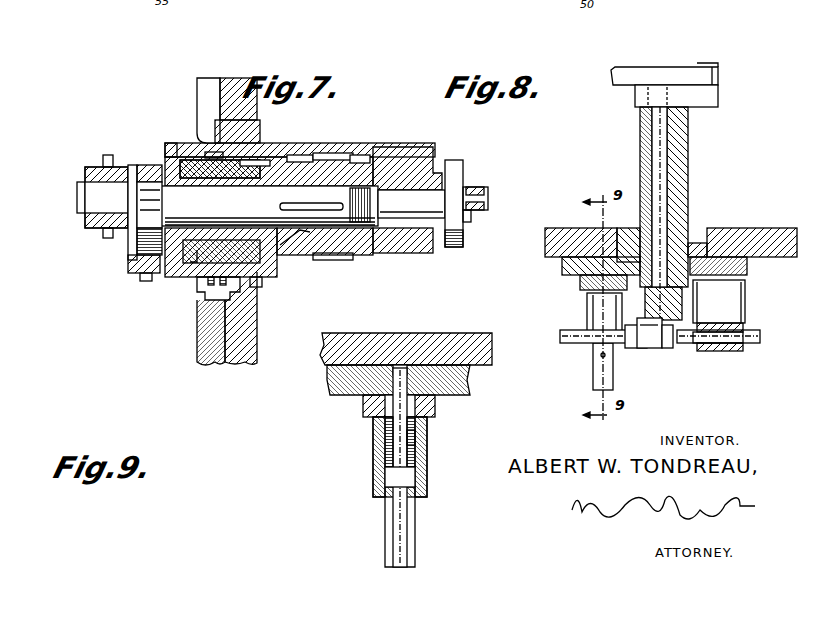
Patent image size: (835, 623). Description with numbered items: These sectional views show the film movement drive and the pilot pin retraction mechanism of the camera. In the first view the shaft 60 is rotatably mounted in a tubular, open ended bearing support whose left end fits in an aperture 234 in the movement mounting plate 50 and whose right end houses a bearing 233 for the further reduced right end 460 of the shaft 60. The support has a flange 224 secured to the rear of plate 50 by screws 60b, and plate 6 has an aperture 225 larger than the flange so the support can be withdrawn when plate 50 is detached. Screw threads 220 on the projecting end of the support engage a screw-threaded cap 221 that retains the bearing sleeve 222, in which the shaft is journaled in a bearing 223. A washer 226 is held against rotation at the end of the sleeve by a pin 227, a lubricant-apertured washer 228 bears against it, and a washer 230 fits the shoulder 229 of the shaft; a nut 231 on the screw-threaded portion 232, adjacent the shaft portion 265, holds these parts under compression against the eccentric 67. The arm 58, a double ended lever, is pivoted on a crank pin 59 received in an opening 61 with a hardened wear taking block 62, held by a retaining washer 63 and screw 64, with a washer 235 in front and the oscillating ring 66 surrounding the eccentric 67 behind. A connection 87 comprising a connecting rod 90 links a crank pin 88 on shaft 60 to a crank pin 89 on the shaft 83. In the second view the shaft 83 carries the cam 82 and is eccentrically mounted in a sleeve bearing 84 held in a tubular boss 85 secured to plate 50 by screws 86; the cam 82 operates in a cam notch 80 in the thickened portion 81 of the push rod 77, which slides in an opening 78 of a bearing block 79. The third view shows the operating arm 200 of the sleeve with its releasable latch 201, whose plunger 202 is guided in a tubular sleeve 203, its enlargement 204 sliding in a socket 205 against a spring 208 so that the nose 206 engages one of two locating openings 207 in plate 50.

In FIG. 7, the plate 6 is at (250, 330).
In FIG. 8, the plate 6 is at (775, 228).
In FIG. 9, the plate 6 is at (345, 333).
In FIG. 7, the movement mounting plate 50 is at (197, 324).
In FIG. 8, the movement mounting plate 50 is at (735, 258).
In FIG. 7, the arm 58 is at (130, 165).
In FIG. 7, the crank pin 59 is at (95, 190).
In FIG. 7, the shaft 60 is at (269, 206).
In FIG. 7, the screws 60b is at (258, 282).
In FIG. 7, the opening in the arm 61 is at (145, 165).
In FIG. 7, the hardened wear taking block 62 is at (85, 220).
In FIG. 7, the retaining washer 63 is at (85, 168).
In FIG. 7, the screw 64 is at (77, 200).
In FIG. 7, the oscillating ring 66 is at (142, 275).
In FIG. 7, the eccentric 67 is at (137, 245).
In FIG. 8, the push rod 77 is at (572, 330).
In FIG. 8, the opening 78 is at (730, 345).
In FIG. 8, the bearing block 79 is at (745, 348).
In FIG. 8, the cam notch 80 is at (660, 348).
In FIG. 8, the thickened portion 81 is at (668, 348).
In FIG. 8, the cam 82 is at (640, 345).
In FIG. 8, the shaft 83 is at (658, 132).
In FIG. 8, the sleeve bearing 84 is at (678, 162).
In FIG. 8, the tubular boss 85 is at (686, 188).
In FIG. 8, the screws 86 is at (630, 252).
In FIG. 7, the connection 87 is at (486, 180).
In FIG. 8, the connection 87 is at (659, 60).
In FIG. 7, the crank pin 88 is at (488, 192).
In FIG. 7, the crank pin 89 is at (488, 203).
In FIG. 8, the crank pin 89 is at (712, 64).
In FIG. 7, the connecting rod 90 is at (475, 220).
In FIG. 8, the connecting rod 90 is at (677, 72).
In FIG. 8, the operating arm 200 is at (580, 285).
In FIG. 9, the operating arm 200 is at (435, 408).
In FIG. 8, the releasable latch 201 is at (584, 373).
In FIG. 9, the releasable latch 201 is at (363, 483).
In FIG. 9, the retractable plunger 202 is at (405, 440).
In FIG. 9, the tubular sleeve 203 is at (412, 475).
In FIG. 9, the enlargement 204 is at (393, 408).
In FIG. 9, the socket 205 is at (385, 445).
In FIG. 8, the nose 206 is at (597, 270).
In FIG. 9, the nose 206 is at (420, 365).
In FIG. 9, the locating openings 207 is at (400, 365).
In FIG. 9, the spring 208 is at (415, 450).
In FIG. 7, the screw threads 220 is at (205, 150).
In FIG. 7, the screw-threaded cap 221 is at (172, 143).
In FIG. 7, the bearing sleeve 222 is at (212, 152).
In FIG. 7, the bearing 223 is at (185, 262).
In FIG. 7, the flange 224 is at (240, 120).
In FIG. 7, the aperture 225 is at (240, 296).
In FIG. 7, the washer 226 is at (287, 250).
In FIG. 7, the pin 227 is at (270, 150).
In FIG. 7, the washer 228 is at (310, 157).
In FIG. 7, the shoulder 229 is at (275, 200).
In FIG. 7, the washer 230 is at (325, 258).
In FIG. 7, the nut 231 is at (375, 165).
In FIG. 7, the screw-threaded portion 232 is at (392, 230).
In FIG. 7, the bearing 233 is at (456, 160).
In FIG. 7, the aperture 234 is at (205, 140).
In FIG. 7, the washer 235 is at (128, 262).
In FIG. 7, the spline 265 is at (362, 222).
In FIG. 7, the reduced right end 460 is at (362, 202).